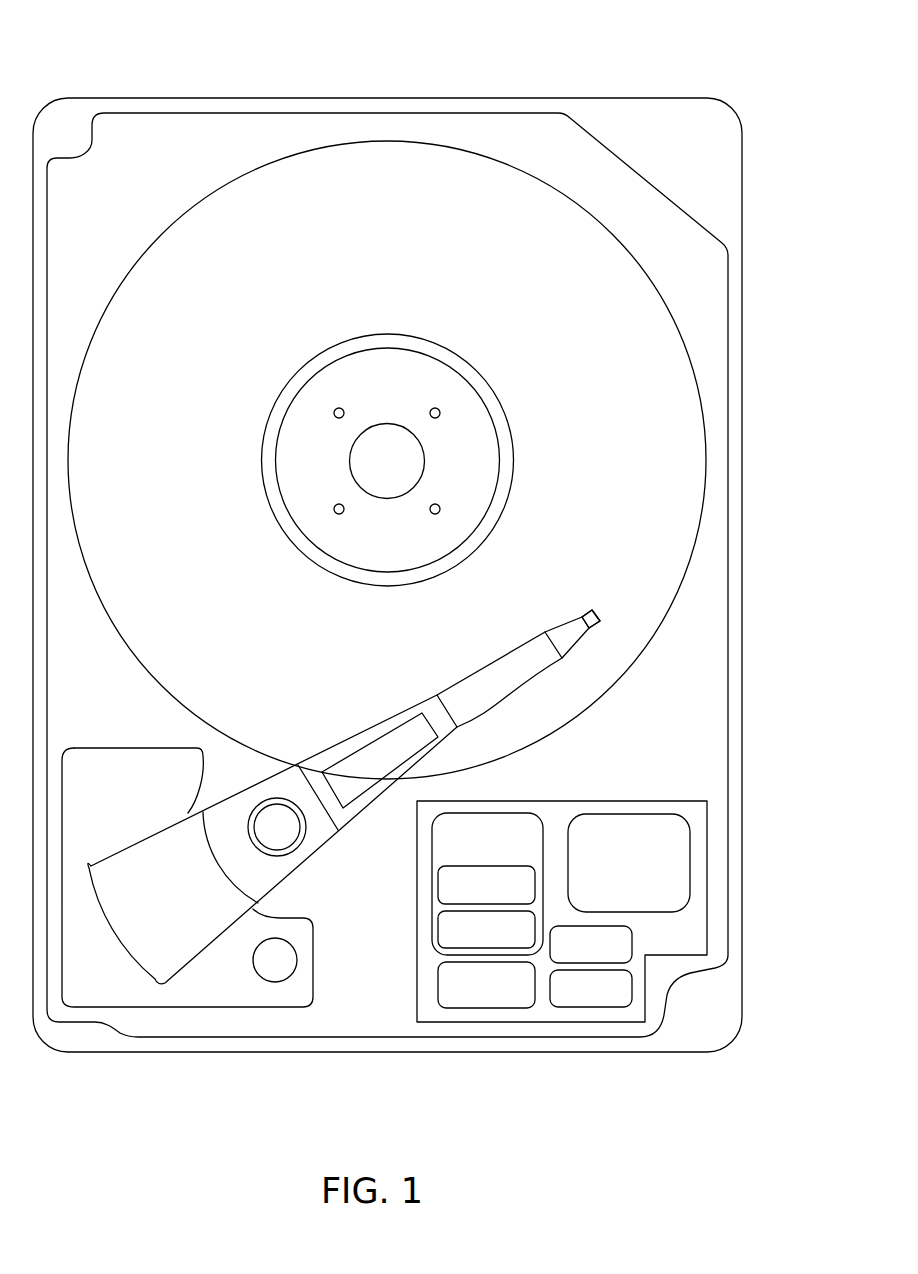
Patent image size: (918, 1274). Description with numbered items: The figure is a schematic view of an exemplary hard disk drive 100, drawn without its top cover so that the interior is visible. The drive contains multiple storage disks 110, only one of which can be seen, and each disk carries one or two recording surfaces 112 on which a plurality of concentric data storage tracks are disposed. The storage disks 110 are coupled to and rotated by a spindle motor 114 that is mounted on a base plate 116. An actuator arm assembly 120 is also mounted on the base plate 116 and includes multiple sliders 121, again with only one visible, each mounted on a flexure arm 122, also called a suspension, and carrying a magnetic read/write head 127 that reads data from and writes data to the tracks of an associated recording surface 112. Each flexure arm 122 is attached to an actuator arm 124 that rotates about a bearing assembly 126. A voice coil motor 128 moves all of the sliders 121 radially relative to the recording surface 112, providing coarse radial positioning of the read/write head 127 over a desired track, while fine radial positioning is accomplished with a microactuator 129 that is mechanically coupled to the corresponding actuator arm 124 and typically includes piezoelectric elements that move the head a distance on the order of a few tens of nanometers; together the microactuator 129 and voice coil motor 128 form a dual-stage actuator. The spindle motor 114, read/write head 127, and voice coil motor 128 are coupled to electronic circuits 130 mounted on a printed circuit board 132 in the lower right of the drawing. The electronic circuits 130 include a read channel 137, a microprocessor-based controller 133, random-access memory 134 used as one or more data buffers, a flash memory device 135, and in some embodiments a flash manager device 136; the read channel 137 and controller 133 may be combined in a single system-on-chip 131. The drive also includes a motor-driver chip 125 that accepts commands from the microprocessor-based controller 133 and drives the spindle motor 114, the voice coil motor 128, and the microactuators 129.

The hard disk drive 100 is at (118, 50).
The storage disk 110 is at (387, 459).
The recording surface 112 is at (151, 444).
The spindle motor 114 is at (488, 401).
The base plate 116 is at (729, 600).
The actuator arm assembly 120 is at (388, 692).
The slider 121 is at (598, 612).
The flexure arm 122 is at (560, 626).
The actuator arm 124 is at (458, 680).
The motor-driver chip 125 is at (466, 997).
The bearing assembly 126 is at (305, 870).
The magnetic read/write head 127 is at (590, 585).
The voice coil motor 128 is at (315, 947).
The microactuator 129 is at (280, 982).
The electronic circuits 130 is at (561, 860).
The system-on-chip 131 is at (466, 857).
The printed circuit board 132 is at (643, 800).
The microprocessor-based controller 133 is at (466, 901).
The random-access memory 134 is at (570, 957).
The flash memory device 135 is at (609, 877).
The flash manager device 136 is at (570, 1002).
The read channel 137 is at (466, 942).